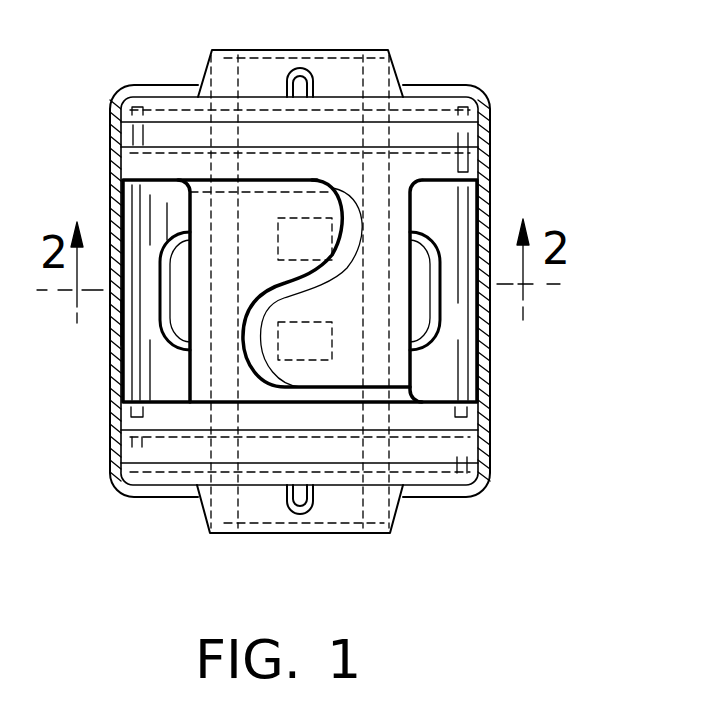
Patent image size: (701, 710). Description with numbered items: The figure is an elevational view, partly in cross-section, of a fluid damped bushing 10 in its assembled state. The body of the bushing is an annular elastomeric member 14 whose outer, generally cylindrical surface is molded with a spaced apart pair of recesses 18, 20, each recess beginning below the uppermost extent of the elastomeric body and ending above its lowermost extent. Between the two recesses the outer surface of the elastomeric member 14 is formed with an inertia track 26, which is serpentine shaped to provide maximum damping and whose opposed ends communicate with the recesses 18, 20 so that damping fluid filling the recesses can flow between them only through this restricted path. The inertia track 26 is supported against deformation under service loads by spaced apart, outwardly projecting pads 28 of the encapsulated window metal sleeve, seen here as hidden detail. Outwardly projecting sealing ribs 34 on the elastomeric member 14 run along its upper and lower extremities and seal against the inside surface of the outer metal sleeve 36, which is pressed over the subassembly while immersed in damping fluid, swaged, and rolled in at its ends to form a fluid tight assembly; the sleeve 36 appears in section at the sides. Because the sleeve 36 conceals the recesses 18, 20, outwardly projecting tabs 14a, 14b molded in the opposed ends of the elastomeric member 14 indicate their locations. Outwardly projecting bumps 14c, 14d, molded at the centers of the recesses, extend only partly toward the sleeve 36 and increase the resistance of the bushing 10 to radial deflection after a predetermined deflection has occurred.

The bushing 10 is at (510, 372).
The annular elastomeric member 14 is at (118, 153).
The outwardly projecting tab 14a is at (313, 80).
The outwardly projecting tab 14b is at (294, 512).
The outwardly projecting bump 14c is at (157, 270).
The outwardly projecting bump 14d is at (440, 262).
The recess 18 is at (447, 372).
The recess 20 is at (160, 360).
The inertia track 26 is at (340, 287).
The outwardly projecting pads 28 is at (203, 142).
The sealing ribs 34 is at (490, 145).
The outer metal sleeve 36 is at (112, 323).